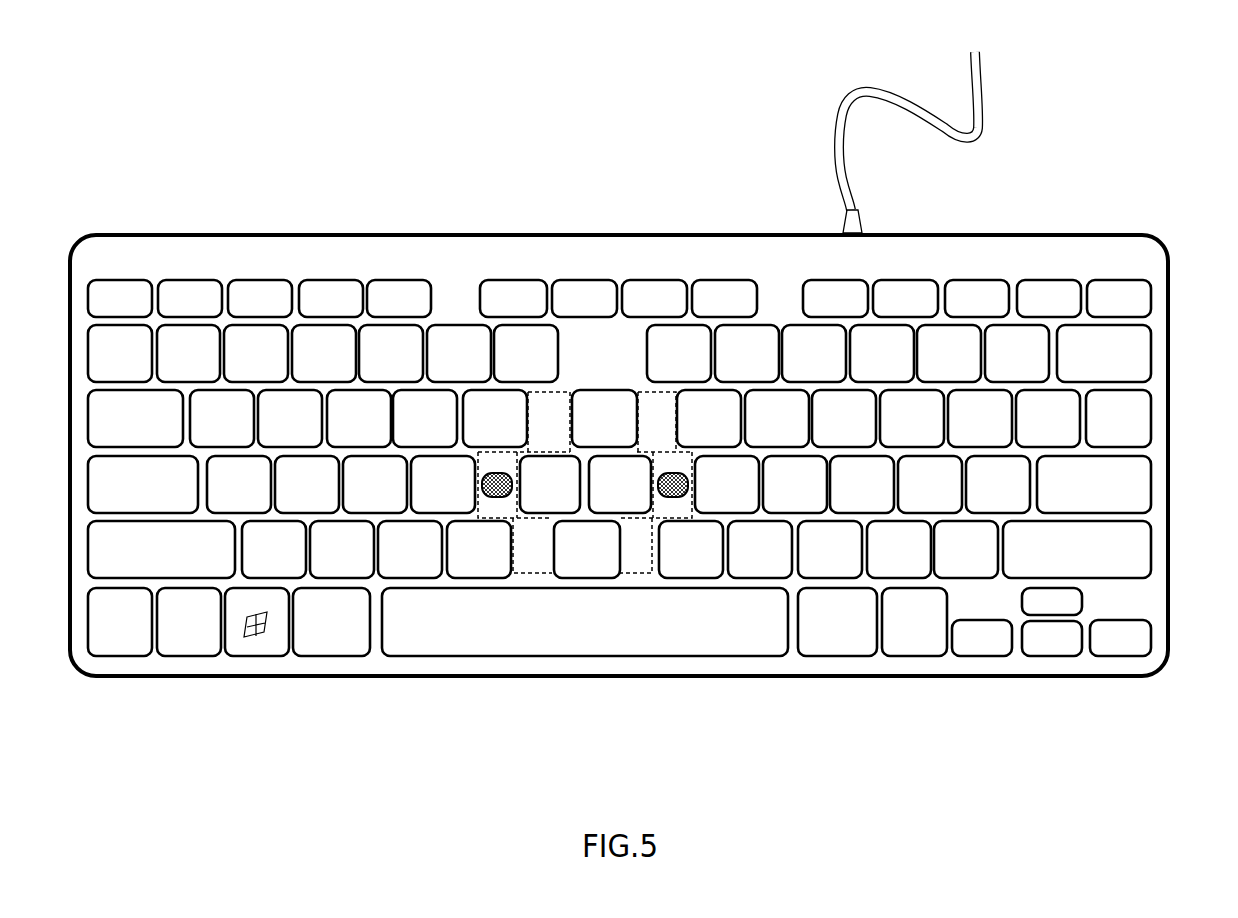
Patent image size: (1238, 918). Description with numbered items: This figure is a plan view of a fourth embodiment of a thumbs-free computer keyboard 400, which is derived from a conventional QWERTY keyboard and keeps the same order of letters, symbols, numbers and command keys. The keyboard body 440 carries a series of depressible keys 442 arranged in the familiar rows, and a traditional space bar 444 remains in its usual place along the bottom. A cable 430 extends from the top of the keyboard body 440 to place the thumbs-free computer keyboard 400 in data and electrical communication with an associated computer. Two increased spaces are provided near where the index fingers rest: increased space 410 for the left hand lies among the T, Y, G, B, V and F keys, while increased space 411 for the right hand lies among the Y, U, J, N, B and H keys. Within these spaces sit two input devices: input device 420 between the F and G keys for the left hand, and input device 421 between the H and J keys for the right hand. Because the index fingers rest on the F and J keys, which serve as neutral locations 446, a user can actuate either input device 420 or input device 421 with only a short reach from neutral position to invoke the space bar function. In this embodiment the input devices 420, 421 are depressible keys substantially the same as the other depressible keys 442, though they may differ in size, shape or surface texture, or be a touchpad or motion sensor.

The thumbs-free computer keyboard 400 is at (243, 203).
The increased space 410 is at (538, 553).
The increased space 411 is at (633, 553).
The input device 420 is at (502, 497).
The input device 421 is at (672, 497).
The cable 430 is at (846, 162).
The keyboard body 440 is at (1010, 247).
The depressible keys 442 is at (225, 498).
The space bar 444 is at (555, 648).
The neutral locations 446 is at (437, 495).